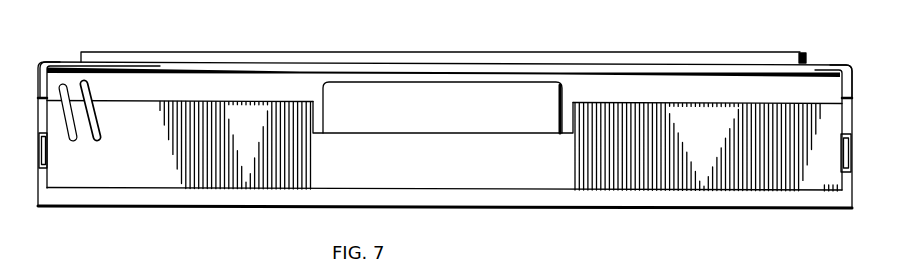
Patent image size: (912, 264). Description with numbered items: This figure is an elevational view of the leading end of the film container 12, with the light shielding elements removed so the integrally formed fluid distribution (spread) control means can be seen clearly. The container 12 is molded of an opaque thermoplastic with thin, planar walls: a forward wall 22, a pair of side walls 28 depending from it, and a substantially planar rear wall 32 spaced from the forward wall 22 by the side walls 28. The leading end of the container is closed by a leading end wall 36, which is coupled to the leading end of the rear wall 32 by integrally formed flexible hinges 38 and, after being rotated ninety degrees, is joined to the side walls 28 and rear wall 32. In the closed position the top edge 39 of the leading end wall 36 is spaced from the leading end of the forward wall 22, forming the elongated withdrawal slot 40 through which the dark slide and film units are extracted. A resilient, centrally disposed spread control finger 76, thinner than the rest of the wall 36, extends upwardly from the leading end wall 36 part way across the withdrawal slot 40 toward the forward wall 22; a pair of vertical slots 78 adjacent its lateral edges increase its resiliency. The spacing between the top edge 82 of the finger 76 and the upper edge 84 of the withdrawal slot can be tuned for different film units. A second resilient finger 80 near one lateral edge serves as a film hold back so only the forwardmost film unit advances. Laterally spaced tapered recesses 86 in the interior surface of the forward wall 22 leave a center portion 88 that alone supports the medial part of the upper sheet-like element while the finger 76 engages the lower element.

The film container 12 is at (64, 51).
The forward wall 22 is at (81, 52).
The tapered recesses 86 is at (47, 70).
The upper edge of the withdrawal slot 84 is at (441, 70).
The center portion 88 is at (378, 75).
The withdrawal slot 40 is at (724, 89).
The top edge of finger 82 is at (501, 82).
The spread control finger 76 is at (549, 92).
The vertical slots 78 is at (318, 127).
The resilient finger 80 is at (79, 91).
The top edge 39 is at (258, 100).
The flexible hinges 38 is at (42, 114).
The leading end wall 36 is at (98, 170).
The rear wall 32 is at (242, 209).
The side walls 28 is at (849, 122).